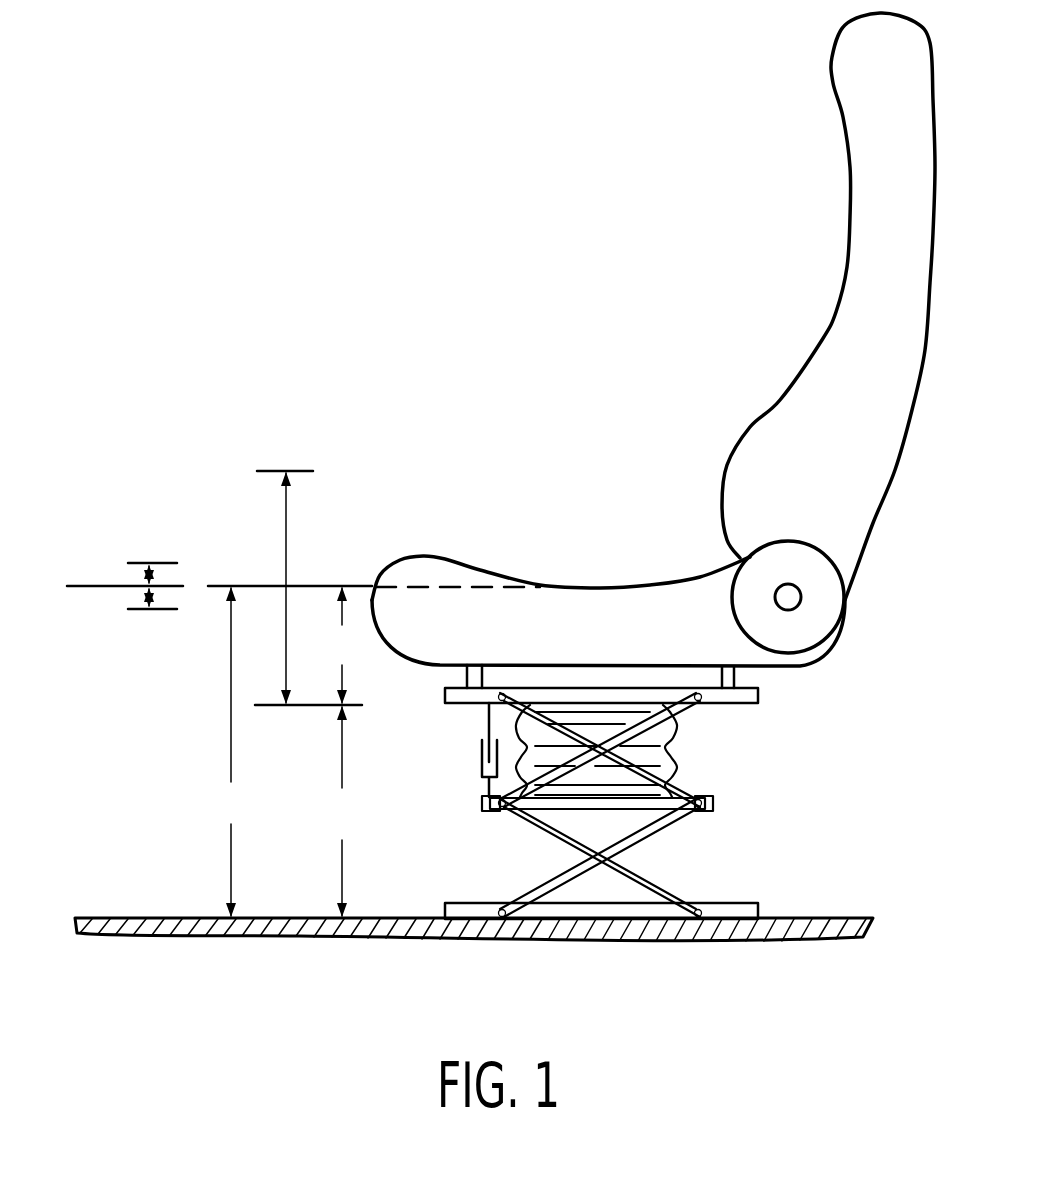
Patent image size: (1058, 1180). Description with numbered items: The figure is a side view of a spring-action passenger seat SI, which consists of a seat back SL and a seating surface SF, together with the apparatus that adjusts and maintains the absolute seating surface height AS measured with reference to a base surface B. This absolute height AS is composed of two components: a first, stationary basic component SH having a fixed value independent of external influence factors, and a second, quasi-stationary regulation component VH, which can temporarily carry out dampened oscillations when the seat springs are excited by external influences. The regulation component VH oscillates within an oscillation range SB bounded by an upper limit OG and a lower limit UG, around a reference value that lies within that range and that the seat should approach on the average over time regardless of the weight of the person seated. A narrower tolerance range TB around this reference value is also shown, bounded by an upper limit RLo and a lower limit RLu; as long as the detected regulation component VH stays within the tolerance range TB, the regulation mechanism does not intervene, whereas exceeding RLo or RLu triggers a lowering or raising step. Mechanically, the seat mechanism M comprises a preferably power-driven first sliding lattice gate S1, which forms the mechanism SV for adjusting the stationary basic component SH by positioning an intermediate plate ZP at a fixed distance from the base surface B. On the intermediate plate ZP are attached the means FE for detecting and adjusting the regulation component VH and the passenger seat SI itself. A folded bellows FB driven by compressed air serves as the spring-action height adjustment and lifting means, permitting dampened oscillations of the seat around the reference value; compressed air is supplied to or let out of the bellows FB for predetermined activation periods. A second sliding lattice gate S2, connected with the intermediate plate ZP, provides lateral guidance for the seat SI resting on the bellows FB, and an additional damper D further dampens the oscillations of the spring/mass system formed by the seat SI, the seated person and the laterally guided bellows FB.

The seat back SL is at (867, 180).
The passenger seat SI is at (727, 463).
The seating surface SF is at (577, 587).
The upper limit of the tolerance range RLo is at (142, 562).
The lower limit of the tolerance range RLu is at (130, 610).
The tolerance range TB is at (182, 600).
The upper limit of the oscillation range OG is at (268, 470).
The lower limit of the oscillation range UG is at (257, 706).
The oscillation range SB is at (287, 618).
The quasi-stationary regulation component VH is at (341, 645).
The stationary basic component SH is at (339, 811).
The absolute seating surface height AS is at (229, 752).
The base surface B is at (412, 917).
The means to detect and adjust the quasi-stationary regulation component FE is at (774, 771).
The seat mechanism M is at (853, 813).
The mechanism to adjust the stationary basic component SV is at (813, 873).
The second sliding lattice gate S2 is at (683, 712).
The first sliding lattice gate S1 is at (663, 828).
The intermediate plate ZP is at (714, 805).
The folded bellows FB is at (668, 755).
The damper D is at (481, 752).